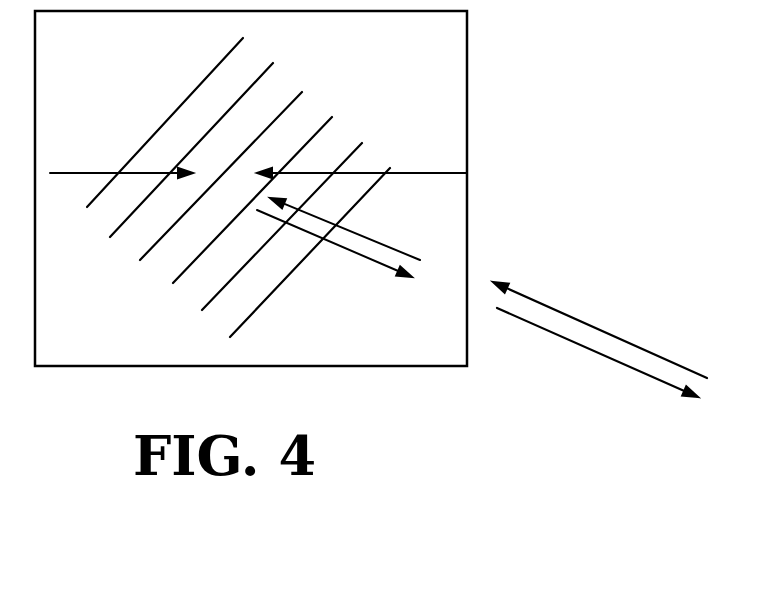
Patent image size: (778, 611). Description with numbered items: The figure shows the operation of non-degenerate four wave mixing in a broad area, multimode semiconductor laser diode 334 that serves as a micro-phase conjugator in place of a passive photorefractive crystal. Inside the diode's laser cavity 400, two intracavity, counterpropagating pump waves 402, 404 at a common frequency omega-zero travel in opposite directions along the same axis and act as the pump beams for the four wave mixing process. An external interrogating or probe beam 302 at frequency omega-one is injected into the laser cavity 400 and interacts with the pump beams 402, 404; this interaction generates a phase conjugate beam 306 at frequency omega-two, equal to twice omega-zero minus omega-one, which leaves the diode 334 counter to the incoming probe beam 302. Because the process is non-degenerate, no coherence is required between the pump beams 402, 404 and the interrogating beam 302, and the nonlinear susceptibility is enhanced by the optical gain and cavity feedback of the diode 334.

The broad area semiconductor laser diode 334 is at (529, 89).
The laser cavity 400 is at (416, 55).
The pump beam 402 is at (70, 176).
The pump beam 404 is at (440, 174).
The interrogating beam 302 is at (637, 347).
The phase conjugate beam 306 is at (592, 352).